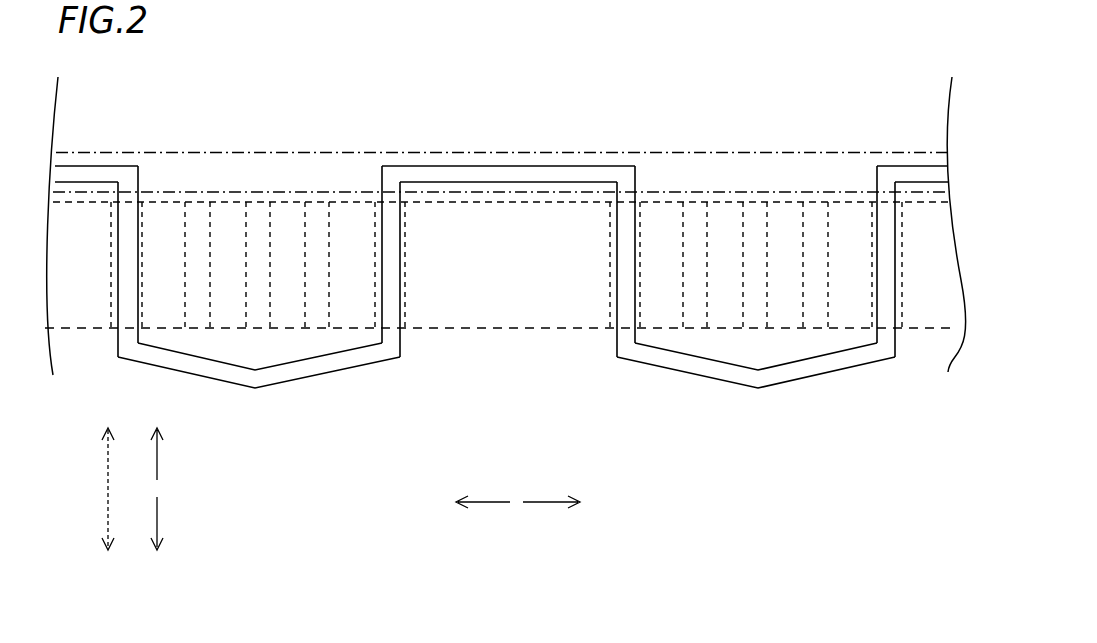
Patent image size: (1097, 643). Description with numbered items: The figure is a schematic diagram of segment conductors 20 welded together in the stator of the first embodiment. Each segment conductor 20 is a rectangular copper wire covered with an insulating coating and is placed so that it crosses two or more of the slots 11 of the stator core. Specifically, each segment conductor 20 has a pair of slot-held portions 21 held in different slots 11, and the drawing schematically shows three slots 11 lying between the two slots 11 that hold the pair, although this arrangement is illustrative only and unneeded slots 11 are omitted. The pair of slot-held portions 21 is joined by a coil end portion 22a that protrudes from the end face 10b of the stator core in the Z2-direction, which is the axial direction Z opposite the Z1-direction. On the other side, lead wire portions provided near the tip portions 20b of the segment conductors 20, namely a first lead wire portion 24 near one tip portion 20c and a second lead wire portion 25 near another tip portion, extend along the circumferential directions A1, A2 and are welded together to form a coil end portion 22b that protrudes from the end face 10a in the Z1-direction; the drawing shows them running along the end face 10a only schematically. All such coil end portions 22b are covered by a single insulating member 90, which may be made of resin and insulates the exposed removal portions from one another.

The end face of the stator core 10a is at (920, 172).
The end face of the stator core 10b is at (490, 345).
The slots 11 is at (131, 210).
The segment conductor 20 is at (252, 421).
The tip portion 20b is at (500, 177).
The tip portion 20c is at (520, 177).
The slot-held portions 21 is at (638, 262).
The coil end portion 22a is at (293, 370).
The coil end portion 22b is at (512, 165).
The first lead wire portion 24 is at (605, 175).
The second lead wire portion 25 is at (425, 177).
The insulating member 90 is at (360, 168).
The axial direction Z is at (99, 489).
The Z1-direction Z1 is at (142, 454).
The Z2-direction Z2 is at (142, 523).
The A1-direction A1 is at (551, 517).
The A2-direction A2 is at (483, 517).